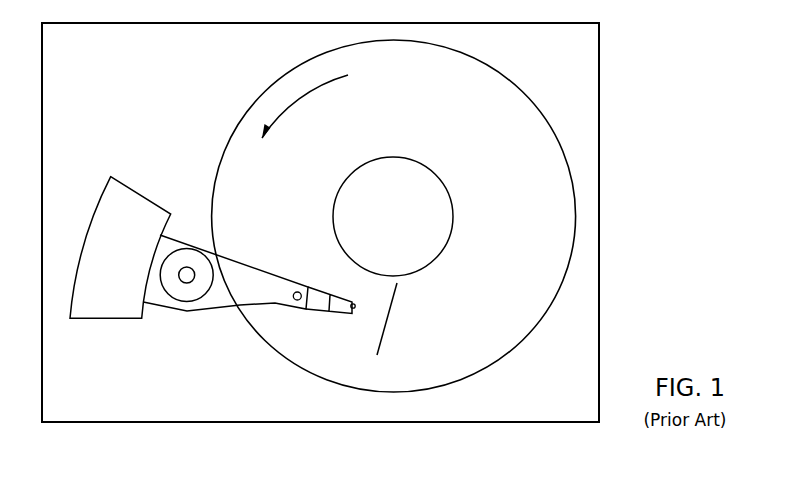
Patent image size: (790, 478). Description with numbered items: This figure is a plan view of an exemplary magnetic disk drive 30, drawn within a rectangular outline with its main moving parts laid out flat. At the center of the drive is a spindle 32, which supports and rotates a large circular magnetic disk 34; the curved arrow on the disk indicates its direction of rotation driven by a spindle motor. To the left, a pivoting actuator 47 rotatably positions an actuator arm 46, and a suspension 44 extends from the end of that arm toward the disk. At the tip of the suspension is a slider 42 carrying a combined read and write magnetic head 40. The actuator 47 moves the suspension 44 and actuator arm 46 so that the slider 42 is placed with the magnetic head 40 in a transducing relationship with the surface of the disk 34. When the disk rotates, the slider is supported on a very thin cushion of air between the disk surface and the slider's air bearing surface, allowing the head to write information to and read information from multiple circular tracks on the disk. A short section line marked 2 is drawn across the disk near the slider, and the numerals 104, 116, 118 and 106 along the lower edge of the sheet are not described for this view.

The magnetic disk drive 30 is at (660, 85).
The spindle 32 is at (433, 172).
The magnetic disk 34 is at (507, 231).
The magnetic head 40 is at (352, 315).
The slider 42 is at (350, 300).
The suspension 44 is at (238, 307).
The actuator arm 46 is at (258, 271).
The actuator 47 is at (132, 198).
The section line 2- 2 is at (406, 293).
The stray numeral (adjacent figure) 104 is at (96, 468).
The stray numeral (adjacent figure) 116 is at (143, 468).
The stray numeral (adjacent figure) 118 is at (245, 468).
The stray numeral (adjacent figure) 106 is at (296, 468).